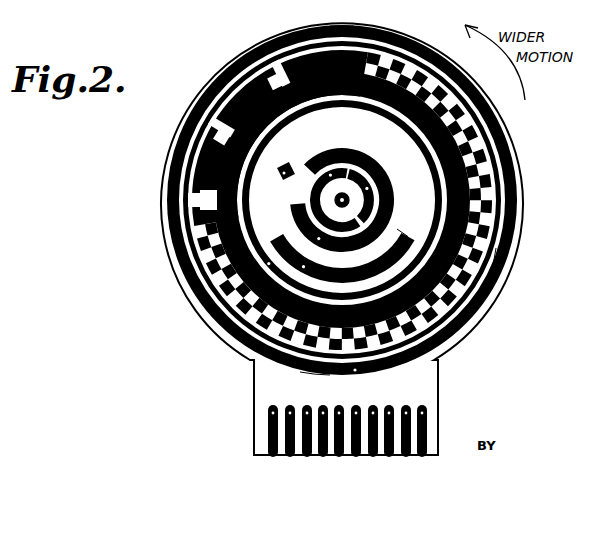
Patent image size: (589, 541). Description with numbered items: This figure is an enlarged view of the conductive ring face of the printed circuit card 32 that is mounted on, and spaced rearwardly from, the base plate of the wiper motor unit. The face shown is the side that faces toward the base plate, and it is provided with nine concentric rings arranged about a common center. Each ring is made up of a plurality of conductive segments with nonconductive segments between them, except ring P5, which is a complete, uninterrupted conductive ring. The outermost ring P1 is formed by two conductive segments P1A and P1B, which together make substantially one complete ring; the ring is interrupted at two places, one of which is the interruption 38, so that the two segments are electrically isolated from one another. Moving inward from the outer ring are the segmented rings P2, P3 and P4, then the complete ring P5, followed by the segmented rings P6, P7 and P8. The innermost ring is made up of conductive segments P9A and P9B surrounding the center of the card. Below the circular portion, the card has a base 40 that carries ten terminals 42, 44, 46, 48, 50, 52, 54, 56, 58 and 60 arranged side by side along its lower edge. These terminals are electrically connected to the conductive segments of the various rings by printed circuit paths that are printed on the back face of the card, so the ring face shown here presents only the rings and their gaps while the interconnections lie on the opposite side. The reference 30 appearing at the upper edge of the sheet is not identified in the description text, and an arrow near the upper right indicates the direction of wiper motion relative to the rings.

The potentiometer assembly 30 is at (108, 2).
The printed circuit card 32 is at (194, 318).
The interruption 38 is at (499, 284).
The base 40 is at (254, 437).
The terminal 42 is at (273, 456).
The terminal 44 is at (290, 456).
The terminal 46 is at (307, 456).
The terminal 48 is at (323, 456).
The terminal 50 is at (339, 456).
The terminal 52 is at (356, 456).
The terminal 54 is at (373, 456).
The terminal 56 is at (389, 456).
The terminal 58 is at (406, 456).
The terminal 60 is at (422, 456).
The outer ring P1 is at (192, 248).
The conductive segment P1A is at (312, 376).
The conductive segment P1B is at (355, 25).
The ring P2 is at (496, 297).
The ring P3 is at (500, 262).
The ring P4 is at (440, 262).
The ring P5 is at (312, 112).
The ring P6 is at (279, 240).
The ring P7 is at (276, 175).
The ring P8 is at (374, 152).
The conductive segment P9A is at (312, 176).
The conductive segment P9B is at (362, 208).